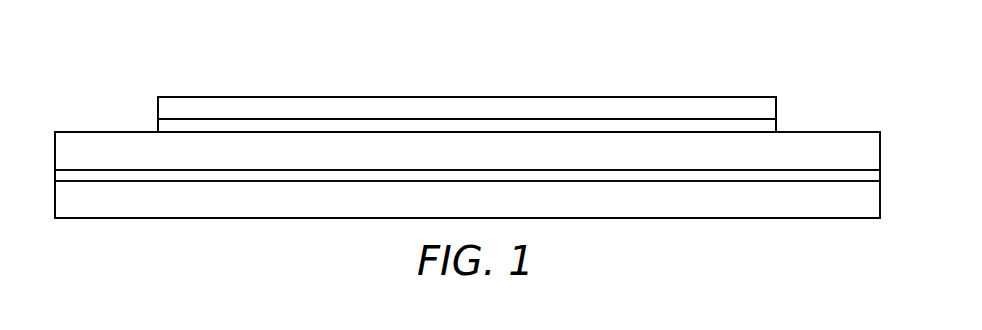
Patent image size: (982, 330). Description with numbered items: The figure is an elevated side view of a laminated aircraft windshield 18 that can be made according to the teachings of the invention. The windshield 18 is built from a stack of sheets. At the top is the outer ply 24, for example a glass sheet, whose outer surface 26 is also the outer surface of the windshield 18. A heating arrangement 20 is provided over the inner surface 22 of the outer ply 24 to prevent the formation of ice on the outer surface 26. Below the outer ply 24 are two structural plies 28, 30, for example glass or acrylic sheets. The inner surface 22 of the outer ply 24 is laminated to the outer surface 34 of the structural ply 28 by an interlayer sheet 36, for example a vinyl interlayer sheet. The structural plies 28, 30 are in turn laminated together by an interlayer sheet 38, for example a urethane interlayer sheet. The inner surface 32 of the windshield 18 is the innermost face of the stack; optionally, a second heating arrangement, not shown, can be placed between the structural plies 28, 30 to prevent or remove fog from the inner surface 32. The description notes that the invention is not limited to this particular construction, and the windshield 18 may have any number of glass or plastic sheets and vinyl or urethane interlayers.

The laminated aircraft windshield 18 is at (772, 70).
The heating arrangement 20 is at (148, 118).
The inner surface of outer ply 22 is at (363, 120).
The outer ply 24 is at (776, 106).
The outer surface 26 is at (640, 96).
The structural ply 28 is at (880, 152).
The structural ply 30 is at (880, 198).
The inner surface 32 is at (597, 219).
The outer surface of structural ply 34 is at (78, 131).
The interlayer sheet 36 is at (155, 128).
The interlayer sheet 38 is at (880, 177).